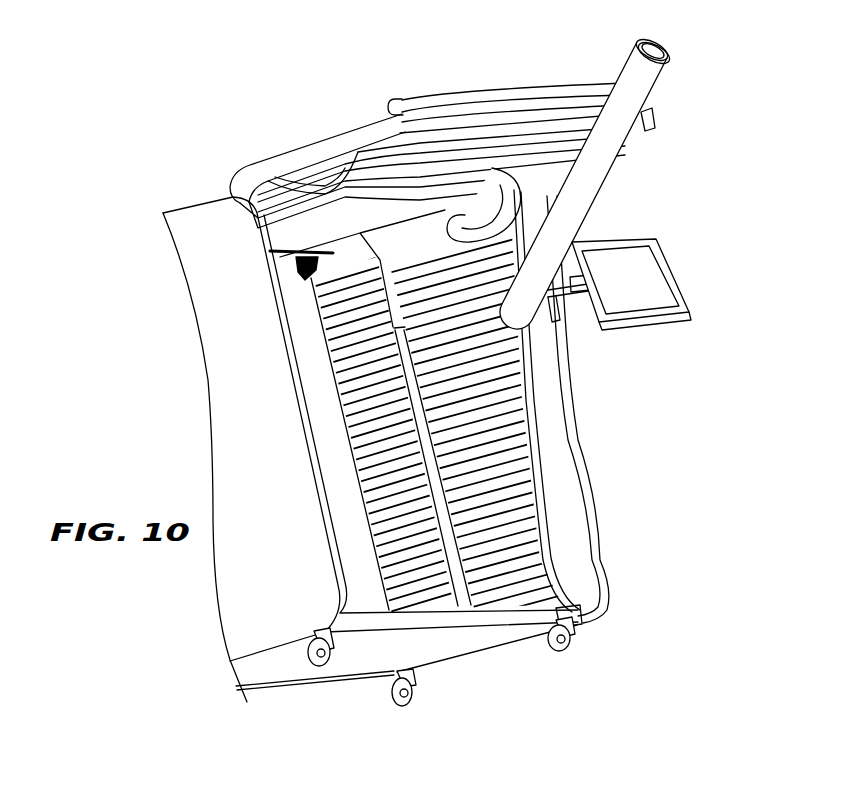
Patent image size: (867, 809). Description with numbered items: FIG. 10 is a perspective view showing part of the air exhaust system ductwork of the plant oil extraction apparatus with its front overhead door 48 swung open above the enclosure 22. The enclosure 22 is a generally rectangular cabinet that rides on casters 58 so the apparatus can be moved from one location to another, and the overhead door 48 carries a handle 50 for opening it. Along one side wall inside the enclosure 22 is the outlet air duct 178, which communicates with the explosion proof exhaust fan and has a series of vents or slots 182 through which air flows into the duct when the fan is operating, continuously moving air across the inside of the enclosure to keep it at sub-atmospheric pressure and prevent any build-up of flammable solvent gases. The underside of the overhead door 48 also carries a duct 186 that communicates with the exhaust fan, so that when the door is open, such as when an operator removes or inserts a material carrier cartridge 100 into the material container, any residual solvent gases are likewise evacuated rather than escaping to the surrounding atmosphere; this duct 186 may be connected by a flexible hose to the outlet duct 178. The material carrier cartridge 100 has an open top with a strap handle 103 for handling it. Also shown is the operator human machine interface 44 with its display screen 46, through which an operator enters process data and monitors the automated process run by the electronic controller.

The enclosure 22 is at (195, 397).
The operator human machine interface 44 is at (665, 325).
The display screen 46 is at (648, 266).
The front overhead door 48 is at (323, 130).
The handle 50 is at (548, 90).
The casters 58 is at (420, 691).
The material carrier cartridge 100 is at (622, 157).
The strap handle 103 is at (673, 53).
The outlet air duct 178 is at (538, 397).
The slots 182 is at (355, 429).
The duct 186 is at (266, 183).